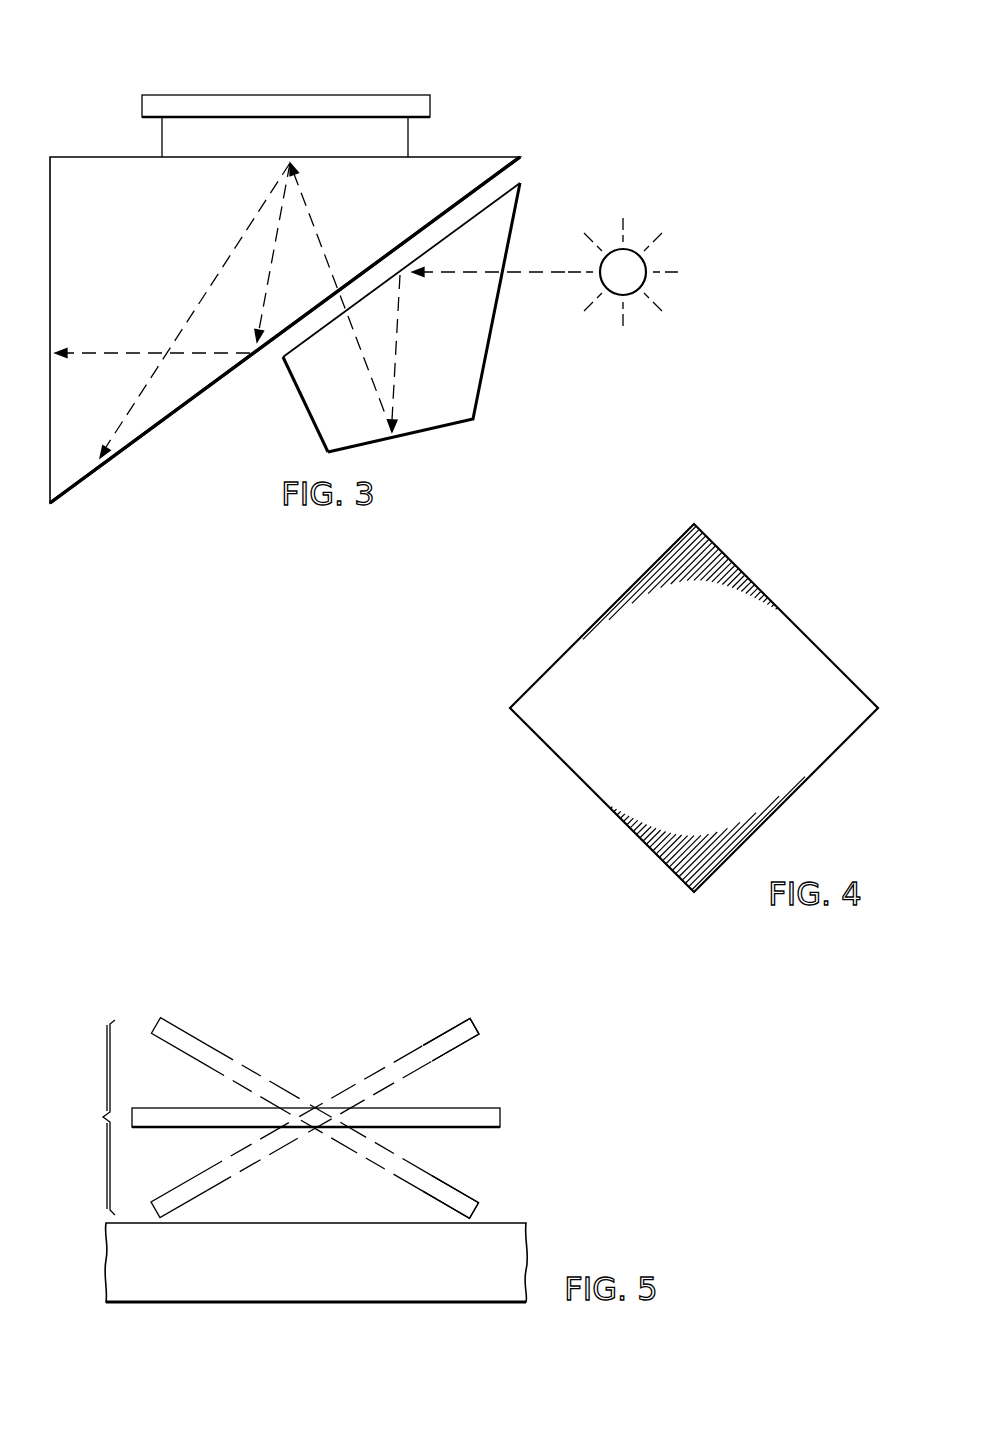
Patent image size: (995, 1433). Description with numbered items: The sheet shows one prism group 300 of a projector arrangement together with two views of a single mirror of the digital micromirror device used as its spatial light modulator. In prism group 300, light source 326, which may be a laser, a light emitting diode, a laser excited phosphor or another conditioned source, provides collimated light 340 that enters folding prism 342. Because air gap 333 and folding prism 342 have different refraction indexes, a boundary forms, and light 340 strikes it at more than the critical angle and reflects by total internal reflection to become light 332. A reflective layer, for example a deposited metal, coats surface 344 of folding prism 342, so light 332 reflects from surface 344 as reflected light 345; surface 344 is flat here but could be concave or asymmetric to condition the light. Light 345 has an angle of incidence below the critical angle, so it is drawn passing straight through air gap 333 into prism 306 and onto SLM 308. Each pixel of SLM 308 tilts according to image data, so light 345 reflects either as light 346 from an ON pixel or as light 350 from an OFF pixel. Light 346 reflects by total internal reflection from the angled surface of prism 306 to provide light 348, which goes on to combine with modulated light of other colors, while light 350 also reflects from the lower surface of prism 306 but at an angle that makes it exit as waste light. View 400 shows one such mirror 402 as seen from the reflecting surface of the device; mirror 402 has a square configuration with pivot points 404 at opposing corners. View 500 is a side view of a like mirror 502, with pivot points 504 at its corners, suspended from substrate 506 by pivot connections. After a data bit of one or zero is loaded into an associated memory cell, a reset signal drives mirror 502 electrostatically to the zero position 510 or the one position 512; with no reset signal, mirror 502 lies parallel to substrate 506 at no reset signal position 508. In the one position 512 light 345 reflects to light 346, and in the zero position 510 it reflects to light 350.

In FIG. 3, the prism group 300 is at (556, 60).
In FIG. 3, the prism 306 is at (102, 165).
In FIG. 3, the SLM 308 is at (287, 95).
In FIG. 3, the light source 326 is at (631, 250).
In FIG. 3, the light 332 is at (396, 363).
In FIG. 3, the air gap 333 is at (522, 168).
In FIG. 3, the collimated light 340 is at (450, 274).
In FIG. 3, the folding prism 342 is at (306, 400).
In FIG. 3, the surface 344 is at (436, 429).
In FIG. 3, the reflected light 345 is at (314, 228).
In FIG. 3, the light 346 is at (271, 250).
In FIG. 3, the light 348 is at (118, 353).
In FIG. 3, the light 350 is at (207, 292).
In FIG. 4, the view 400 is at (812, 536).
In FIG. 4, the mirror 402 is at (548, 669).
In FIG. 4, the pivot points 404 is at (697, 510).
In FIG. 5, the view 500 is at (176, 954).
In FIG. 5, the mirror 502 is at (87, 1117).
In FIG. 5, the pivot points 504 is at (310, 1092).
In FIG. 5, the substrate 506 is at (106, 1265).
In FIG. 5, the no reset signal position 508 is at (502, 1118).
In FIG. 5, the zero position 510 is at (480, 1027).
In FIG. 5, the one position 512 is at (480, 1212).